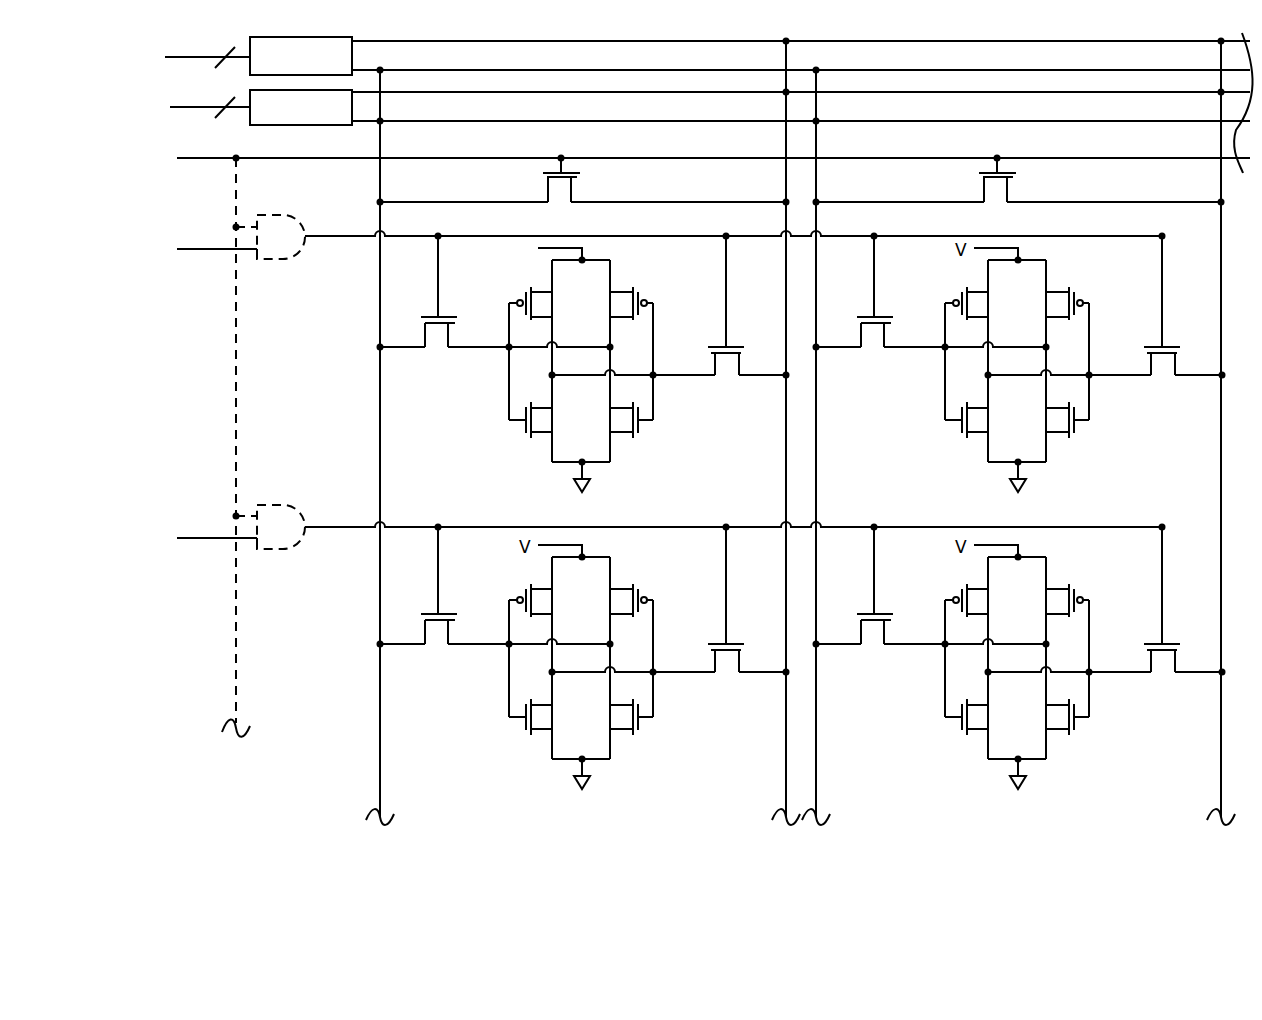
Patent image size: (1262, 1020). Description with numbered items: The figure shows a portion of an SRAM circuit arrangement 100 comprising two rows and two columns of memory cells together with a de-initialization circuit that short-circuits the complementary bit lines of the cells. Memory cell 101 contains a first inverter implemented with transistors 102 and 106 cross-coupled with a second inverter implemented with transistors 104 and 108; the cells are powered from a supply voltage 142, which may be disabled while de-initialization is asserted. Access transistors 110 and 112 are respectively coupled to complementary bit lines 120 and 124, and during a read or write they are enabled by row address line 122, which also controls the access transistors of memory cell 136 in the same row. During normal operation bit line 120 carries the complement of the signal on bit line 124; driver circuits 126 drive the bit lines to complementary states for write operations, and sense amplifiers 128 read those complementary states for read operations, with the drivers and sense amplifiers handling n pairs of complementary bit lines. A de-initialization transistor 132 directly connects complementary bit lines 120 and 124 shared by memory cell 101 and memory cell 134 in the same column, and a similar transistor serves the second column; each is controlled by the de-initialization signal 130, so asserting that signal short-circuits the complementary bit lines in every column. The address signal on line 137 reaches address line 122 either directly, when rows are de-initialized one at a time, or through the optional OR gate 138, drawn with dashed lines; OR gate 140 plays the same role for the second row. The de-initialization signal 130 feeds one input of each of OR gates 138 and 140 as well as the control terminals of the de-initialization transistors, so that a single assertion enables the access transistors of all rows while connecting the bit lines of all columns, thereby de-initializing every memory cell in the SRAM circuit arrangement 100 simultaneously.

The SRAM circuit arrangement 100 is at (952, 29).
The memory cell 101 is at (583, 368).
The transistor 102 is at (523, 290).
The transistor 104 is at (645, 290).
The transistor 106 is at (520, 432).
The transistor 108 is at (643, 432).
The access transistor 110 is at (430, 349).
The access transistor 112 is at (728, 377).
The complementary bit line 120 is at (381, 409).
The row address line 122 is at (508, 236).
The complementary bit line 124 is at (784, 421).
The driver circuits 126 is at (342, 117).
The sense amplifiers 128 is at (354, 62).
The de-initialization signal 130 is at (313, 161).
The de-initialization transistor 132 is at (580, 187).
The memory cell 134 is at (485, 777).
The memory cell 136 is at (931, 465).
The address signal line 137 is at (220, 250).
The OR gate 138 is at (294, 247).
The OR gate 140 is at (294, 537).
The supply voltage 142 is at (582, 248).